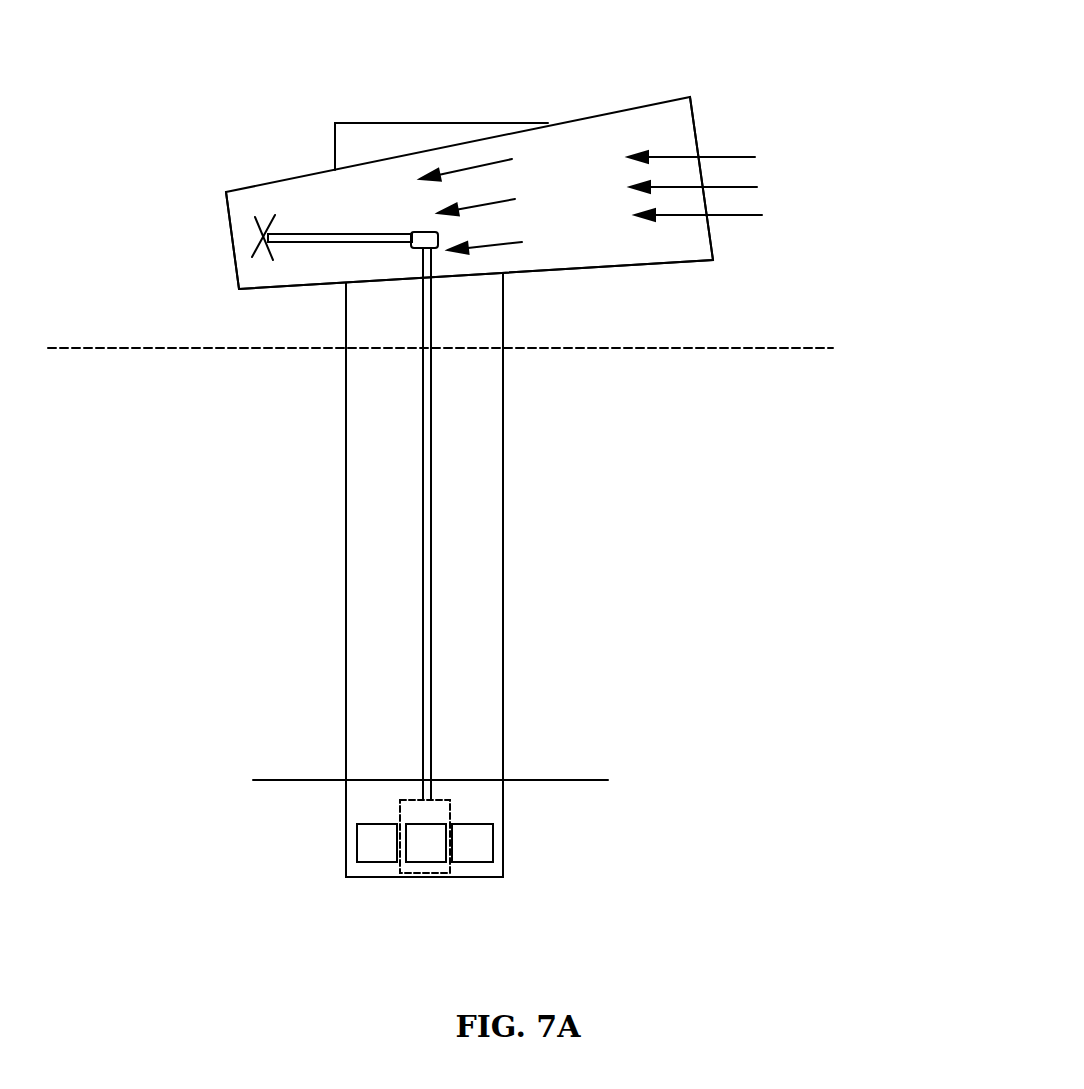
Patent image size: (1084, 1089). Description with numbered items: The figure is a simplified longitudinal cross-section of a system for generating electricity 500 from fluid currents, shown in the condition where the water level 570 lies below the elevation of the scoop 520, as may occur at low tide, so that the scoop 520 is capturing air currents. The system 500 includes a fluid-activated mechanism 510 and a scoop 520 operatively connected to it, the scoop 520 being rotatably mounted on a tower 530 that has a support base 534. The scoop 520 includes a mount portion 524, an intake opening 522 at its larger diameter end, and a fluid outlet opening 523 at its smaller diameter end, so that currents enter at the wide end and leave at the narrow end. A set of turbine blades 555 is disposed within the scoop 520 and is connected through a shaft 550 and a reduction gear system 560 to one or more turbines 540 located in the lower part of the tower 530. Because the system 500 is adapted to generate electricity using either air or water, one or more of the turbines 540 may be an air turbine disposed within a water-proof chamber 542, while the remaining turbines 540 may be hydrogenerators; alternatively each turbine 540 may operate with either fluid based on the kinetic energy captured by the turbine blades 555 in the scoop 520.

The system for generating electricity 500 is at (258, 359).
The fluid-activated mechanism 510 is at (423, 137).
The scoop 520 is at (583, 150).
The intake opening 522 is at (710, 238).
The fluid outlet opening 523 is at (232, 258).
The mount portion 524 is at (392, 275).
The tower 530 is at (470, 515).
The support base 534 is at (503, 587).
The turbines 540 is at (383, 862).
The water-proof chamber 542 is at (452, 808).
The shaft 550 is at (308, 233).
The turbine blades 555 is at (257, 232).
The reduction gear system 560 is at (440, 249).
The water level 570 is at (760, 347).